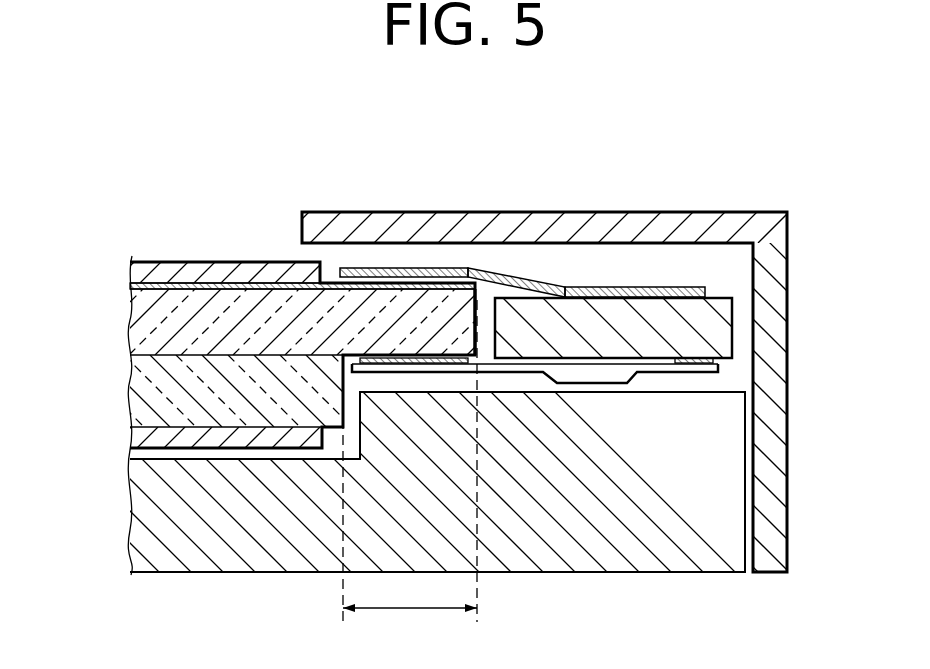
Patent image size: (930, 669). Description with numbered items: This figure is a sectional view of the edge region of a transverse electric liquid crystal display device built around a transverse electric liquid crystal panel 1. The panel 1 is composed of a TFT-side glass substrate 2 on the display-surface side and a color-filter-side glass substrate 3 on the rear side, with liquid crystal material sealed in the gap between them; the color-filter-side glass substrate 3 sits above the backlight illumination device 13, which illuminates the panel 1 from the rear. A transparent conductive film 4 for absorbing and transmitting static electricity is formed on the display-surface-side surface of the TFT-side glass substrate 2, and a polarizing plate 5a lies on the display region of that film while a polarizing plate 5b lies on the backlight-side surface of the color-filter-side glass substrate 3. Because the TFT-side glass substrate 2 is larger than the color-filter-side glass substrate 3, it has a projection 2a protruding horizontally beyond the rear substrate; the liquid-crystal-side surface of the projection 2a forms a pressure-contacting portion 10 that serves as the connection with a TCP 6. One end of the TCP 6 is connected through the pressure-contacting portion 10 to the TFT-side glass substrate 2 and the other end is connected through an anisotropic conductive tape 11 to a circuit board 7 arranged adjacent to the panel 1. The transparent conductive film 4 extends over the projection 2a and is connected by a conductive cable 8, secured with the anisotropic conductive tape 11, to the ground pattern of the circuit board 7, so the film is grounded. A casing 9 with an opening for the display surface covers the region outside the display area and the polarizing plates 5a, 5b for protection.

The transverse electric liquid crystal panel 1 is at (125, 382).
The TFT-side glass substrate 2 is at (328, 300).
The projection 2a is at (458, 303).
The color-filter-side glass substrate 3 is at (208, 380).
The transparent conductive film 4 is at (263, 280).
The polarizing plate 5a is at (168, 262).
The polarizing plate 5b is at (150, 435).
The TCP 6 is at (613, 376).
The circuit board 7 is at (618, 310).
The conductive cable 8 is at (476, 272).
The casing 9 is at (588, 228).
The pressure-contacting portion 10 is at (410, 461).
The anisotropic conductive tape 11 is at (395, 275).
The backlight illumination device 13 is at (262, 528).